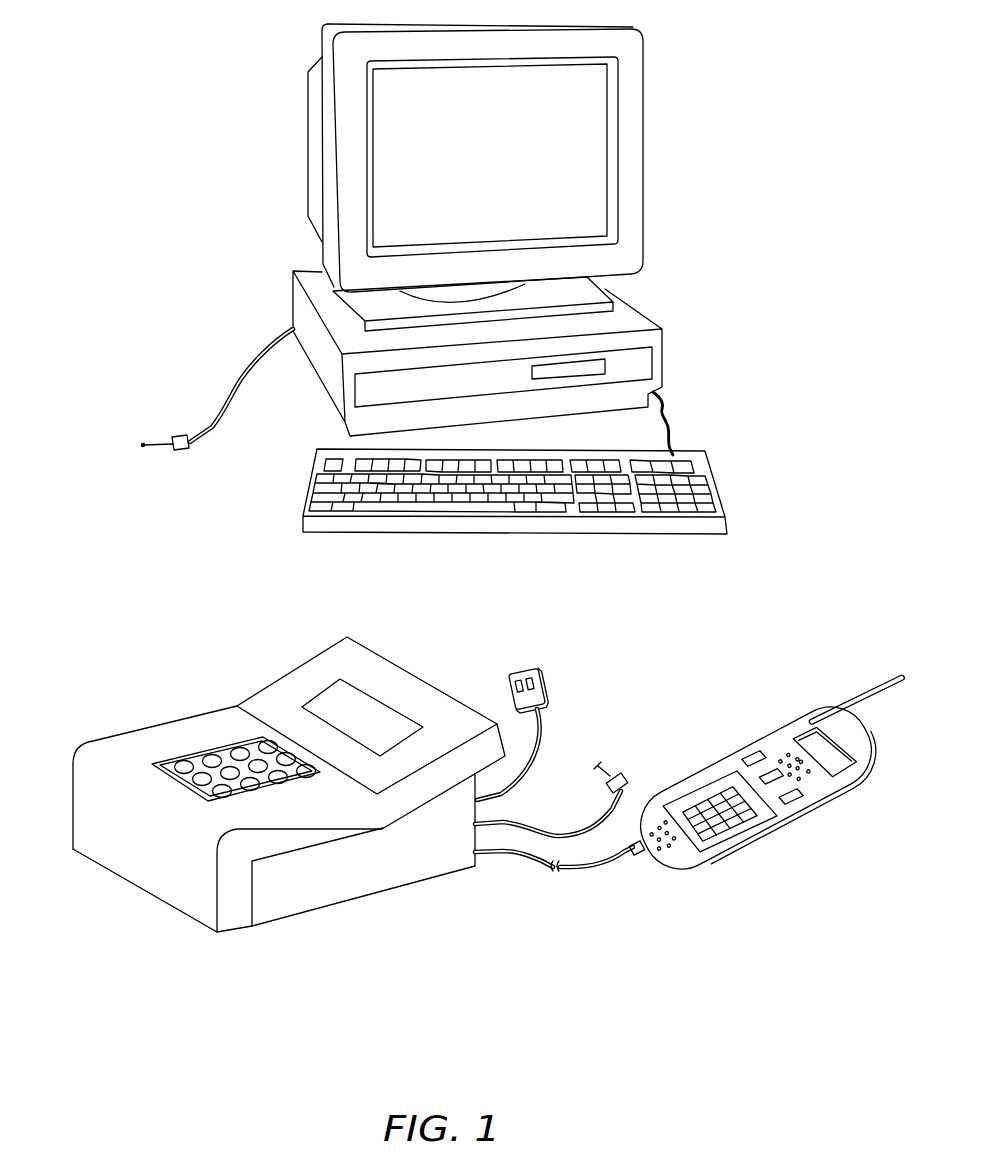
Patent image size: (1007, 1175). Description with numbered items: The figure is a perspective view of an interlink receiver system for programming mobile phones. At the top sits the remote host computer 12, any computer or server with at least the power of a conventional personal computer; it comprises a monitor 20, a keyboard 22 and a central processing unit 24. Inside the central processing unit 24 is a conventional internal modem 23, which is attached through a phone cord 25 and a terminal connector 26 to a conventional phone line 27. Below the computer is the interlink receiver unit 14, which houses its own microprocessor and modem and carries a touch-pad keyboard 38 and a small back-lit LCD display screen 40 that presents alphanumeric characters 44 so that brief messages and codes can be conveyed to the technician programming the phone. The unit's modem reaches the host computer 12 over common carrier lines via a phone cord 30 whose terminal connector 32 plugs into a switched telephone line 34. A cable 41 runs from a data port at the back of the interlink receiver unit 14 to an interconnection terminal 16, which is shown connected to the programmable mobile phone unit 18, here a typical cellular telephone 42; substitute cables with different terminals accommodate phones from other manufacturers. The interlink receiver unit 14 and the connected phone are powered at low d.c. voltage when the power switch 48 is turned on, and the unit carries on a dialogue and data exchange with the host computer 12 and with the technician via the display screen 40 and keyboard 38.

The remote host computer 12 is at (665, 341).
The interlink receiver unit 14 is at (165, 719).
The interconnection terminal 16 is at (627, 863).
The programmable mobile phone unit 18 is at (797, 804).
The monitor 20 is at (645, 200).
The keyboard 22 is at (640, 540).
The internal modem 23 is at (567, 377).
The central processing unit 24 is at (635, 310).
The phone cord 25 is at (267, 343).
The terminal connector 26 is at (180, 437).
The phone line 27 is at (160, 445).
The phone cord 30 is at (523, 823).
The terminal connector 32 is at (626, 774).
The switched telephone line 34 is at (608, 766).
The touch-pad keyboard 38 is at (222, 747).
The LCD display screen 40 is at (318, 693).
The cable 41 is at (575, 873).
The cellular telephone 42 is at (798, 823).
The alphanumeric characters 44 is at (360, 692).
The power switch 48 is at (524, 668).